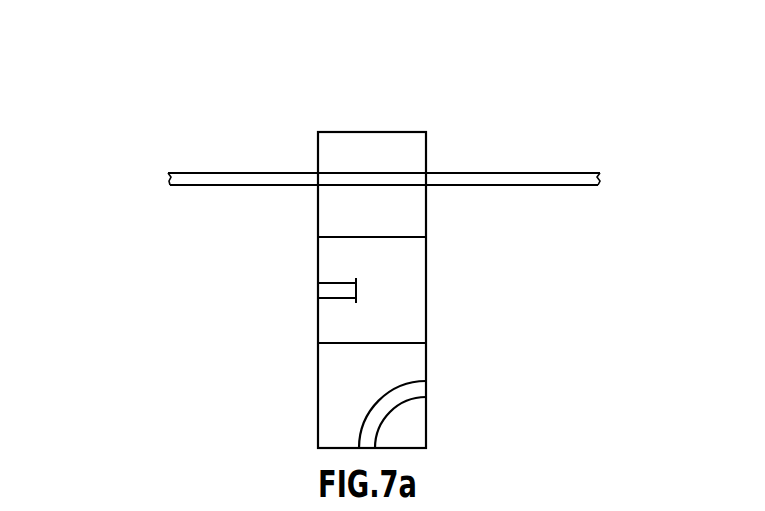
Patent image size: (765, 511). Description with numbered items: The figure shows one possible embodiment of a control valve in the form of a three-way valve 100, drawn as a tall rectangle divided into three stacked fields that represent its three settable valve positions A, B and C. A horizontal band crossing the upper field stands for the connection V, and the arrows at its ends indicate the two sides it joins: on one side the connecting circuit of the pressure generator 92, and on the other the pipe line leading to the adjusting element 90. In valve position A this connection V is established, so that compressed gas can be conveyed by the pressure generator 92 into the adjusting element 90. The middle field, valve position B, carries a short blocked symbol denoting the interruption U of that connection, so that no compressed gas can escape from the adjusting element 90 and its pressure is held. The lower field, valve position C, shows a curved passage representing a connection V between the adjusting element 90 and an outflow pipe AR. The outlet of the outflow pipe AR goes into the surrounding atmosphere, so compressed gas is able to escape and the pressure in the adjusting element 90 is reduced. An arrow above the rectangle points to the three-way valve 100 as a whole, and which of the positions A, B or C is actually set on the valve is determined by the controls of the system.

The 3-way valve 100 is at (371, 108).
The connection V is at (388, 173).
The pressure generator 92 is at (140, 180).
The adjusting element 90 is at (618, 178).
The valve position A is at (335, 217).
The valve position B is at (340, 325).
The valve position C is at (333, 429).
The interruption U is at (338, 283).
The outflow pipe AR is at (392, 411).